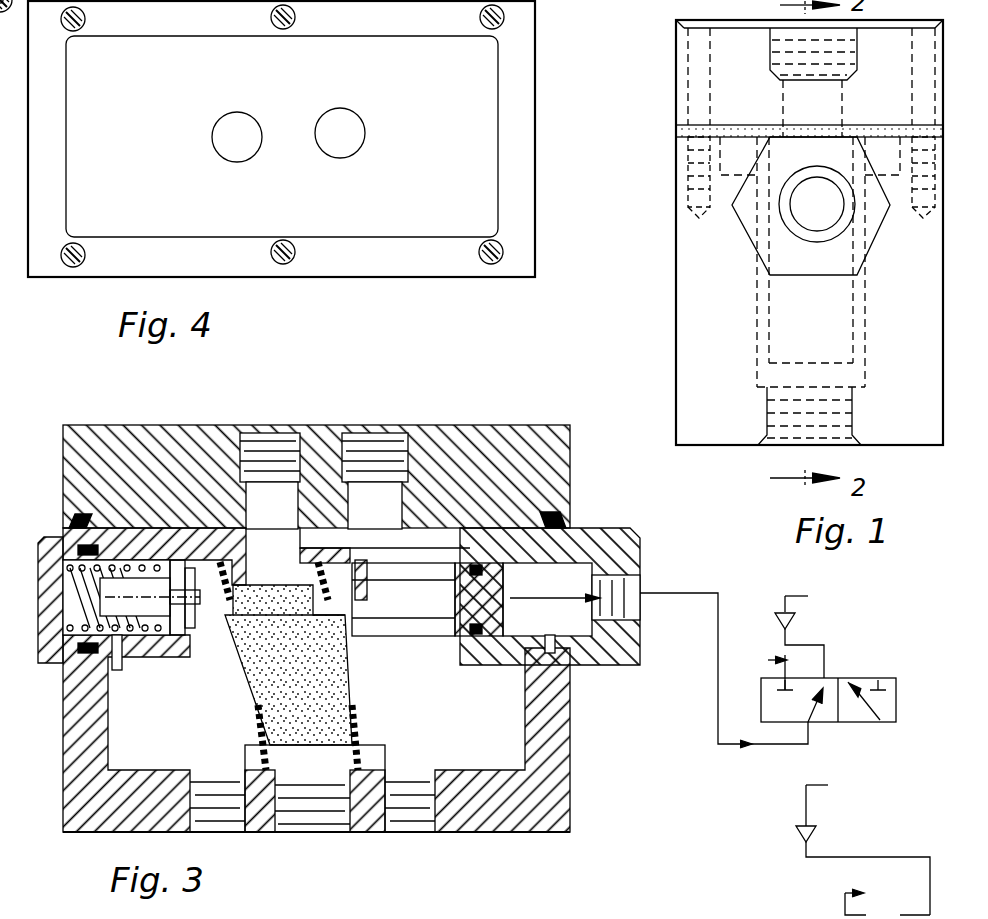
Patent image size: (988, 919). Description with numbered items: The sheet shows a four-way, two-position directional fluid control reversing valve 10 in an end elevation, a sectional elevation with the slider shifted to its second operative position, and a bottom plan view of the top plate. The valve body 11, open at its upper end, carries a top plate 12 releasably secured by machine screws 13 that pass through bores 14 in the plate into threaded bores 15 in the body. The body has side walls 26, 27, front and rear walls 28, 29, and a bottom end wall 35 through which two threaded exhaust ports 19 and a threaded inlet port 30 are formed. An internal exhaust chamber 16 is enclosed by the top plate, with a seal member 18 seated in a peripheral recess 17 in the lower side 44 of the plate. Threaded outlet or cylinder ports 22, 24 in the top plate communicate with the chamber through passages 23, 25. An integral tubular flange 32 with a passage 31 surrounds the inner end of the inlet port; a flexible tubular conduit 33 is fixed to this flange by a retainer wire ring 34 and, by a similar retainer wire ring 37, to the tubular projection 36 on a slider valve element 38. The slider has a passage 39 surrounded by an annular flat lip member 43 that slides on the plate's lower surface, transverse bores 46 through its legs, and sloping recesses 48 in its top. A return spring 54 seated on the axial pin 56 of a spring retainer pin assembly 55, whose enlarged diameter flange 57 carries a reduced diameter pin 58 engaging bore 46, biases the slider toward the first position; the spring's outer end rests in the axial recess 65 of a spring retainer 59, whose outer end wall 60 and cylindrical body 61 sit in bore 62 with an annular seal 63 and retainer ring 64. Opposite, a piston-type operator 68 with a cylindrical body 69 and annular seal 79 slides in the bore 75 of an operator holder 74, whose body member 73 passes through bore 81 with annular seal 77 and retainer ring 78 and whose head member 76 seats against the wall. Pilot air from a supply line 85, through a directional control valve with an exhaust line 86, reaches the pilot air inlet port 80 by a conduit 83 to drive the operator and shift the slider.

In FIG. 1, the reversing valve 10 is at (676, 334).
In FIG. 3, the reversing valve 10 is at (96, 425).
In FIG. 1, the valve body 11 is at (676, 309).
In FIG. 3, the valve body 11 is at (572, 742).
In FIG. 4, the top plate 12 is at (108, 280).
In FIG. 1, the top plate 12 is at (676, 110).
In FIG. 3, the top plate 12 is at (570, 496).
In FIG. 4, the machine screws 13 is at (84, 26).
In FIG. 1, the machine screws 13 is at (700, 54).
In FIG. 4, the bores 14 is at (68, 30).
In FIG. 1, the bores 14 is at (690, 78).
In FIG. 1, the bores 15 is at (690, 164).
In FIG. 3, the exhaust chamber 16 is at (540, 720).
In FIG. 4, the peripheral recess 17 is at (520, 100).
In FIG. 1, the peripheral recess 17 is at (705, 125).
In FIG. 3, the peripheral recess 17 is at (553, 512).
In FIG. 4, the seal member 18 is at (282, 136).
In FIG. 1, the seal member 18 is at (676, 131).
In FIG. 3, the seal member 18 is at (565, 530).
In FIG. 3, the exhaust ports 19 is at (215, 822).
In FIG. 3, the outlet or cylinder port 22 is at (262, 440).
In FIG. 4, the passage 23 is at (237, 112).
In FIG. 3, the passage 23 is at (284, 498).
In FIG. 1, the outlet or cylinder port 24 is at (775, 28).
In FIG. 3, the outlet or cylinder port 24 is at (408, 445).
In FIG. 4, the passage 25 is at (333, 108).
In FIG. 1, the passage 25 is at (783, 108).
In FIG. 3, the passage 25 is at (370, 492).
In FIG. 1, the side wall 26 is at (727, 430).
In FIG. 3, the side wall 26 is at (552, 700).
In FIG. 1, the side wall 27 is at (942, 420).
In FIG. 3, the side wall 27 is at (80, 700).
In FIG. 1, the front wall 28 is at (695, 276).
In FIG. 3, the rear wall 29 is at (490, 721).
In FIG. 1, the inlet port 30 is at (848, 428).
In FIG. 3, the inlet port 30 is at (312, 822).
In FIG. 3, the passage 31 is at (345, 700).
In FIG. 3, the tubular flange 32 is at (362, 742).
In FIG. 3, the flexible tubular conduit 33 is at (258, 656).
In FIG. 3, the retainer wire ring 34 is at (255, 746).
In FIG. 3, the bottom end wall 35 is at (95, 826).
In FIG. 3, the tubular projection 36 is at (300, 566).
In FIG. 3, the retainer wire ring 37 is at (355, 578).
In FIG. 3, the slider valve element 38 is at (370, 546).
In FIG. 3, the passage 39 is at (246, 560).
In FIG. 3, the annular flat lip member 43 is at (292, 528).
In FIG. 4, the lower side 44 is at (370, 258).
In FIG. 1, the lower side 44 is at (800, 138).
In FIG. 3, the lower side 44 is at (468, 535).
In FIG. 3, the transverse bore 46 is at (200, 600).
In FIG. 3, the sloping recesses 48 is at (360, 540).
In FIG. 3, the return spring 54 is at (55, 538).
In FIG. 3, the spring retainer pin assembly 55 is at (62, 620).
In FIG. 3, the axial pin 56 is at (152, 597).
In FIG. 3, the enlarged diameter flange 57 is at (188, 636).
In FIG. 3, the reduced diameter pin 58 is at (200, 560).
In FIG. 3, the spring retainer 59 is at (66, 512).
In FIG. 3, the outer end wall 60 is at (66, 650).
In FIG. 3, the cylindrical body 61 is at (152, 648).
In FIG. 3, the bore 62 is at (90, 652).
In FIG. 3, the annular seal 63 is at (100, 660).
In FIG. 3, the retainer ring 64 is at (118, 548).
In FIG. 3, the axial recess 65 is at (112, 572).
In FIG. 3, the piston-type operator 68 is at (358, 630).
In FIG. 3, the cylindrical body 69 is at (405, 625).
In FIG. 3, the body member 73 is at (468, 652).
In FIG. 1, the operator holder 74 is at (825, 278).
In FIG. 3, the operator holder 74 is at (642, 640).
In FIG. 3, the bore 75 is at (495, 568).
In FIG. 1, the head member 76 is at (800, 262).
In FIG. 3, the head member 76 is at (612, 640).
In FIG. 3, the annular seal 77 is at (552, 650).
In FIG. 3, the retainer ring 78 is at (522, 530).
In FIG. 3, the annular seal 79 is at (460, 648).
In FIG. 1, the pilot air inlet port 80 is at (795, 205).
In FIG. 3, the pilot air inlet port 80 is at (634, 598).
In FIG. 3, the bore 81 is at (590, 640).
In FIG. 3, the conduit 83 is at (716, 712).
In FIG. 3, the supply line 85 is at (826, 660).
In FIG. 3, the exhaust line 86 is at (785, 668).